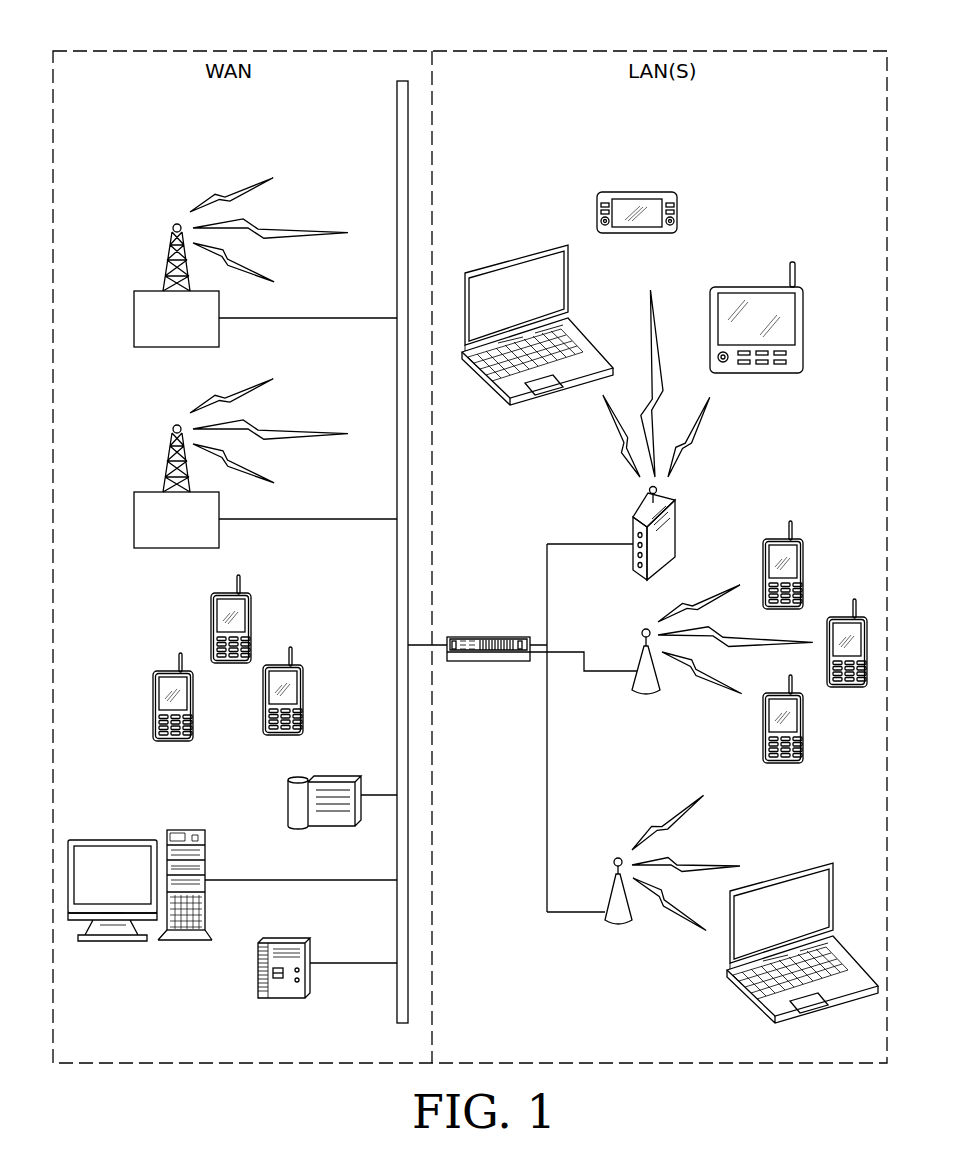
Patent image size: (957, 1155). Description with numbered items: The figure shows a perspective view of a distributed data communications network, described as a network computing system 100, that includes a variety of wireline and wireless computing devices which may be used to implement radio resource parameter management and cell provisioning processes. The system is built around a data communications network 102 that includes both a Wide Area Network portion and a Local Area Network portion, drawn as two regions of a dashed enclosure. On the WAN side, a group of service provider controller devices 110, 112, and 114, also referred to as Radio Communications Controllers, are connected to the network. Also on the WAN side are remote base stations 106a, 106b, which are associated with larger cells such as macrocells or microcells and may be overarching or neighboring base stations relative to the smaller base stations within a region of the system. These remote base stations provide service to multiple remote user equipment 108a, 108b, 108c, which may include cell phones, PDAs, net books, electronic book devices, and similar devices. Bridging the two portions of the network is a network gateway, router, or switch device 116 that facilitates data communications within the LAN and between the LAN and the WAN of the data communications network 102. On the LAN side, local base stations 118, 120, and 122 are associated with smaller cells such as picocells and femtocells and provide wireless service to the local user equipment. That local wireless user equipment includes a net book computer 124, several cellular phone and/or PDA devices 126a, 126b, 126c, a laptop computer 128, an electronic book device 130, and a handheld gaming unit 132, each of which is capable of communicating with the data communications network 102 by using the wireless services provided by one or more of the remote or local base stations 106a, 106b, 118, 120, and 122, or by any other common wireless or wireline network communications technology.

The network computing system 100 is at (186, 42).
The data communications network 102 is at (397, 99).
The remote base station 106a is at (146, 291).
The remote base station 106b is at (146, 493).
The remote user equipment 108a is at (153, 697).
The remote user equipment 108b is at (211, 617).
The remote user equipment 108c is at (302, 691).
The service provider controller device 110 is at (288, 797).
The service provider controller device 112 is at (185, 830).
The service provider controller device 114 is at (310, 951).
The network gateway, router, or switch device 116 is at (478, 637).
The local base station 118 is at (607, 898).
The local base station 120 is at (637, 656).
The local base station 122 is at (675, 521).
The net book computer 124 is at (813, 870).
The cellular phone and/or PDA device 126a is at (763, 746).
The cellular phone and/or PDA device 126b is at (855, 689).
The cellular phone and/or PDA device 126c is at (803, 566).
The laptop computer 128 is at (500, 263).
The electronic book device 130 is at (746, 287).
The handheld gaming unit 132 is at (623, 192).